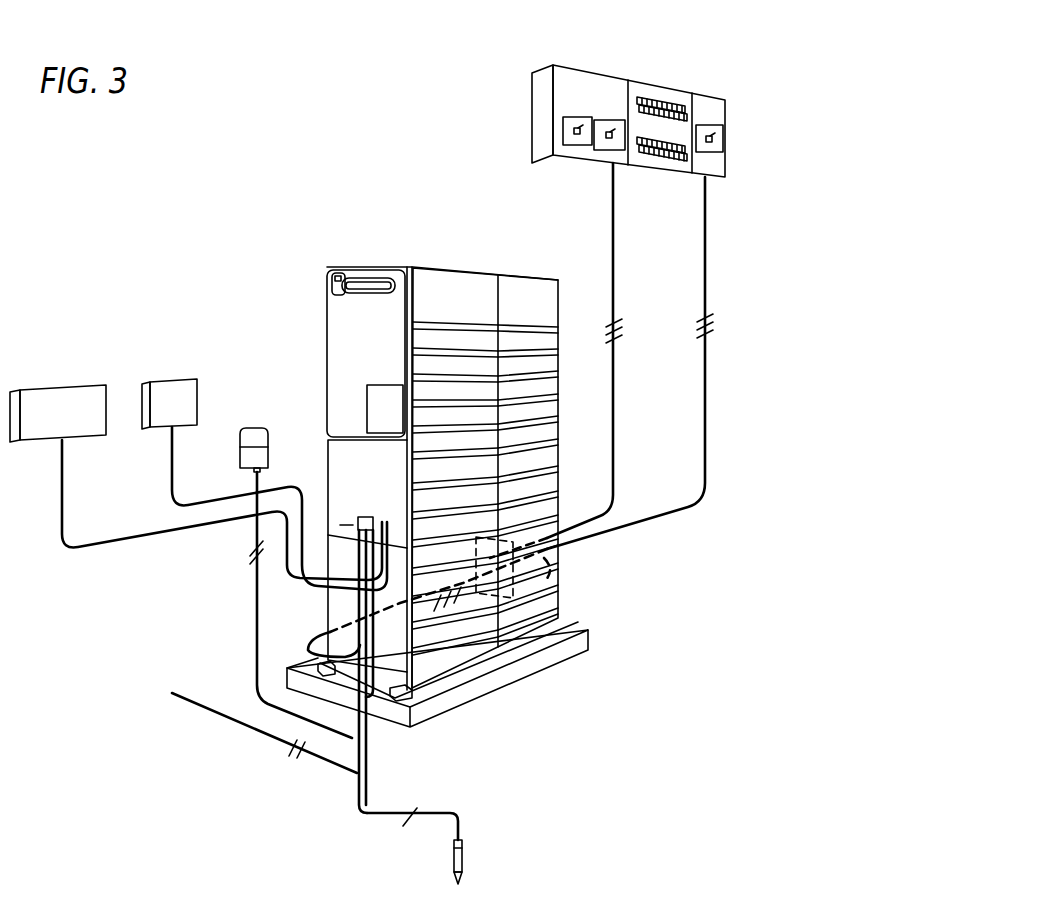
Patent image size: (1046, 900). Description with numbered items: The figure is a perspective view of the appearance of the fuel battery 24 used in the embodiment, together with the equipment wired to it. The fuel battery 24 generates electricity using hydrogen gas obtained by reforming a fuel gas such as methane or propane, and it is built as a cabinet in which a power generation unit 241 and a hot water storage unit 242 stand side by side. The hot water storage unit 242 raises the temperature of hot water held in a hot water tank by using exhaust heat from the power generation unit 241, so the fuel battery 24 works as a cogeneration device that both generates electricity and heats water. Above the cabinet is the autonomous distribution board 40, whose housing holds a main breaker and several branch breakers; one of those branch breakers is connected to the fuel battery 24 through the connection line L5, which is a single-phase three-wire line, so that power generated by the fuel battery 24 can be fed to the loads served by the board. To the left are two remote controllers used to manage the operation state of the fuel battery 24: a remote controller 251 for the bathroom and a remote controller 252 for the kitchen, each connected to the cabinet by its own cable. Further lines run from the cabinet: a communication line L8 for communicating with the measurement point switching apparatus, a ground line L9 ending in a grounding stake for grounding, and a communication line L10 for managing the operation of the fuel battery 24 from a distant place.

The autonomous distribution board 40 is at (662, 76).
The fuel battery 24 is at (546, 269).
The power generation unit 241 is at (510, 285).
The hot water storage unit 242 is at (428, 280).
The remote controller for bathroom 251 is at (32, 392).
The remote controller for kitchen 252 is at (158, 385).
The connection line L5 is at (703, 398).
The communication line L8 is at (319, 634).
The ground line L9 is at (394, 811).
The communication line L10 is at (247, 727).